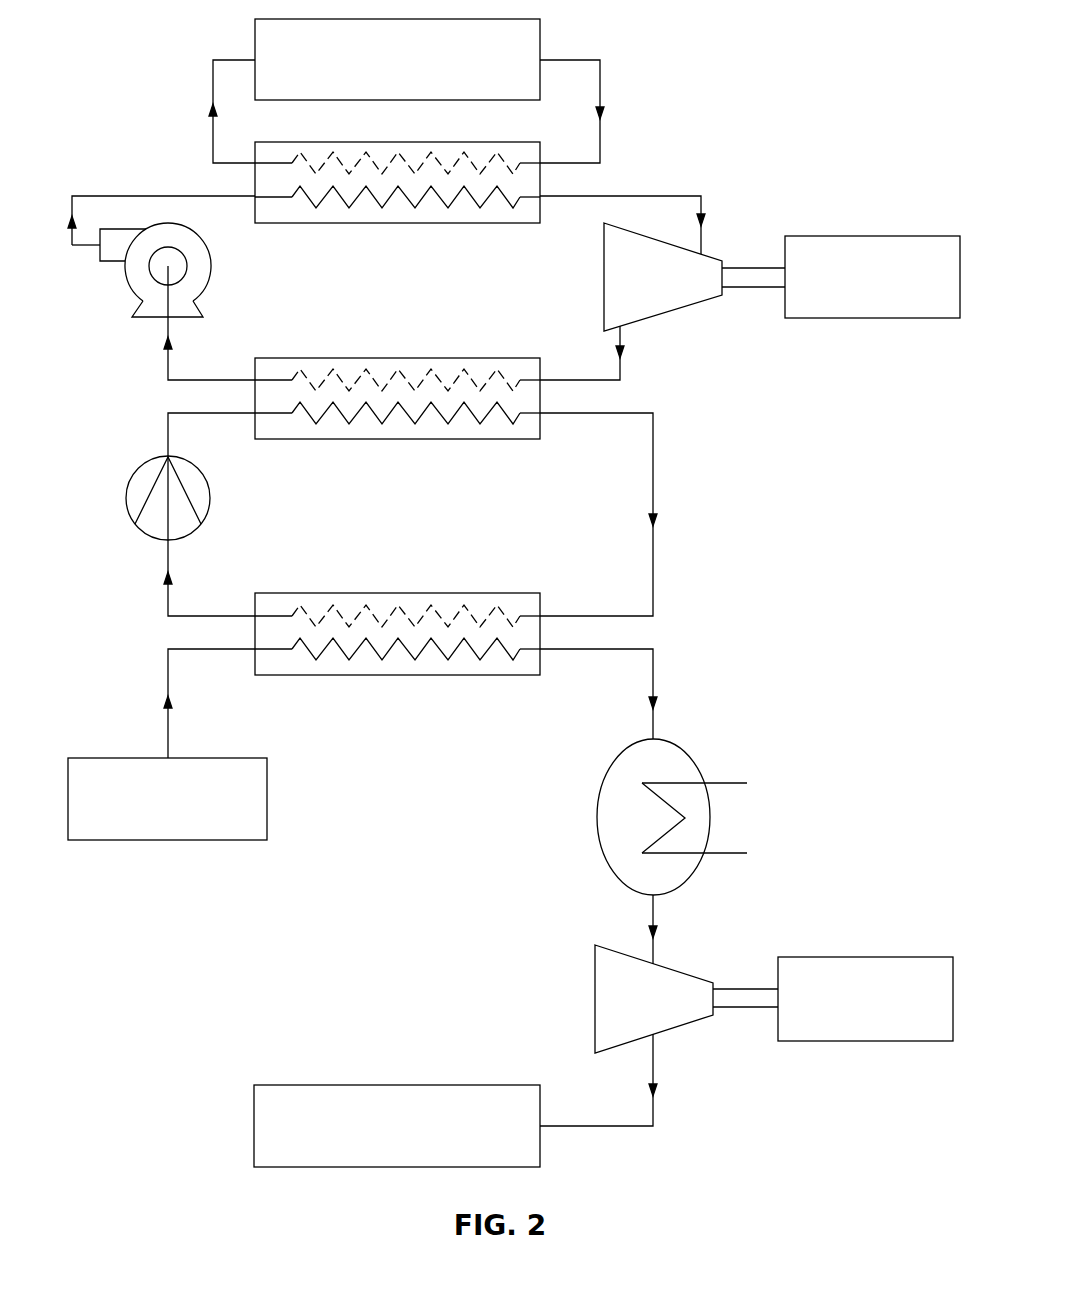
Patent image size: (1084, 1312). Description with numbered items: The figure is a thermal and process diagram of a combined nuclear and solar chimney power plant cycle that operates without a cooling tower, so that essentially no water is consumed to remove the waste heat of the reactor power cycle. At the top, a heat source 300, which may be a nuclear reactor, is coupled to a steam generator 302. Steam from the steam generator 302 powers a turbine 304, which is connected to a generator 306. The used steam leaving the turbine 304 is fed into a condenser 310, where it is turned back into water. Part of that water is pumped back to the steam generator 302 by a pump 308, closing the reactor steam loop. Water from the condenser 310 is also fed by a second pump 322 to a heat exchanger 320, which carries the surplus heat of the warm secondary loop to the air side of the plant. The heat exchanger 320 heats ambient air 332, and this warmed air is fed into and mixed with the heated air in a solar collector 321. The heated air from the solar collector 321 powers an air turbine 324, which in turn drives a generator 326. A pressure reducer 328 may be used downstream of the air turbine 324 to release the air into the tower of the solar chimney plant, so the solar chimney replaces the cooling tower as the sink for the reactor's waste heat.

The heat source 300 is at (371, 74).
The steam generator 302 is at (367, 213).
The turbine 304 is at (636, 290).
The generator 306 is at (847, 290).
The pump 308 is at (137, 275).
The condenser 310 is at (395, 430).
The heat exchanger 320 is at (395, 667).
The solar collector 321 is at (685, 760).
The pump 322 is at (130, 520).
The turbine 324 is at (627, 1012).
The generator 326 is at (839, 1012).
The pressure reducer 328 is at (371, 1140).
The ambient air 332 is at (142, 813).